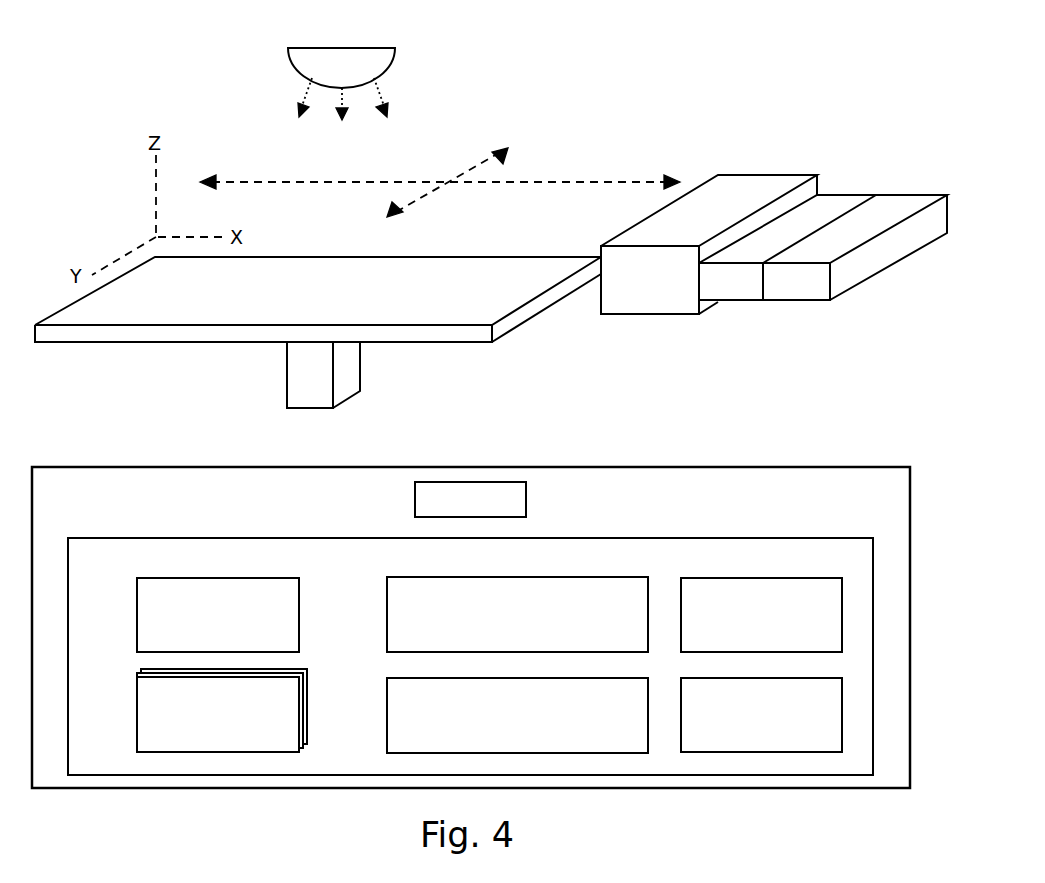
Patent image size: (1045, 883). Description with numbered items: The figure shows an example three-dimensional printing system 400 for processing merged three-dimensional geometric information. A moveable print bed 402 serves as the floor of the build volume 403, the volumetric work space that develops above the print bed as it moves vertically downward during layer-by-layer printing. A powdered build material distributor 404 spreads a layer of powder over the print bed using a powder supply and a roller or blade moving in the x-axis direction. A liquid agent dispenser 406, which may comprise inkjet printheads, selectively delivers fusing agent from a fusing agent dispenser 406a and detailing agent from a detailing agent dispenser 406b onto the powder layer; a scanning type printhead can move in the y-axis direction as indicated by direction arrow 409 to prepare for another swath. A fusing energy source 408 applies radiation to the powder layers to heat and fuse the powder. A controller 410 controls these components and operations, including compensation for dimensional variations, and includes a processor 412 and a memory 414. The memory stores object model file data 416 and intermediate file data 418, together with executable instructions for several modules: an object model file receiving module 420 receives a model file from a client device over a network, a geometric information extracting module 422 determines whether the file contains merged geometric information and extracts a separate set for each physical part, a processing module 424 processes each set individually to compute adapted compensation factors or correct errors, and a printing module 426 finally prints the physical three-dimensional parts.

The 3D printing system 400 is at (715, 46).
The print bed 402 is at (430, 262).
The build volume 403 is at (290, 299).
The powdered build material distributor 404 is at (750, 178).
The liquid agent dispenser 406 is at (823, 243).
The fusing agent dispenser 406a is at (735, 297).
The detailing agent dispenser 406b is at (812, 296).
The fusing energy source 408 is at (318, 47).
The direction arrow 409 is at (466, 172).
The controller 410 is at (471, 627).
The processor 412 is at (470, 499).
The memory 414 is at (470, 656).
The 3D object model file data 416 is at (218, 615).
The intermediate file data 418 is at (222, 710).
The 3D object model file receiving module 420 is at (517, 614).
The 3D geometric information extracting module 422 is at (517, 715).
The processing module 424 is at (761, 615).
The printing module 426 is at (761, 715).